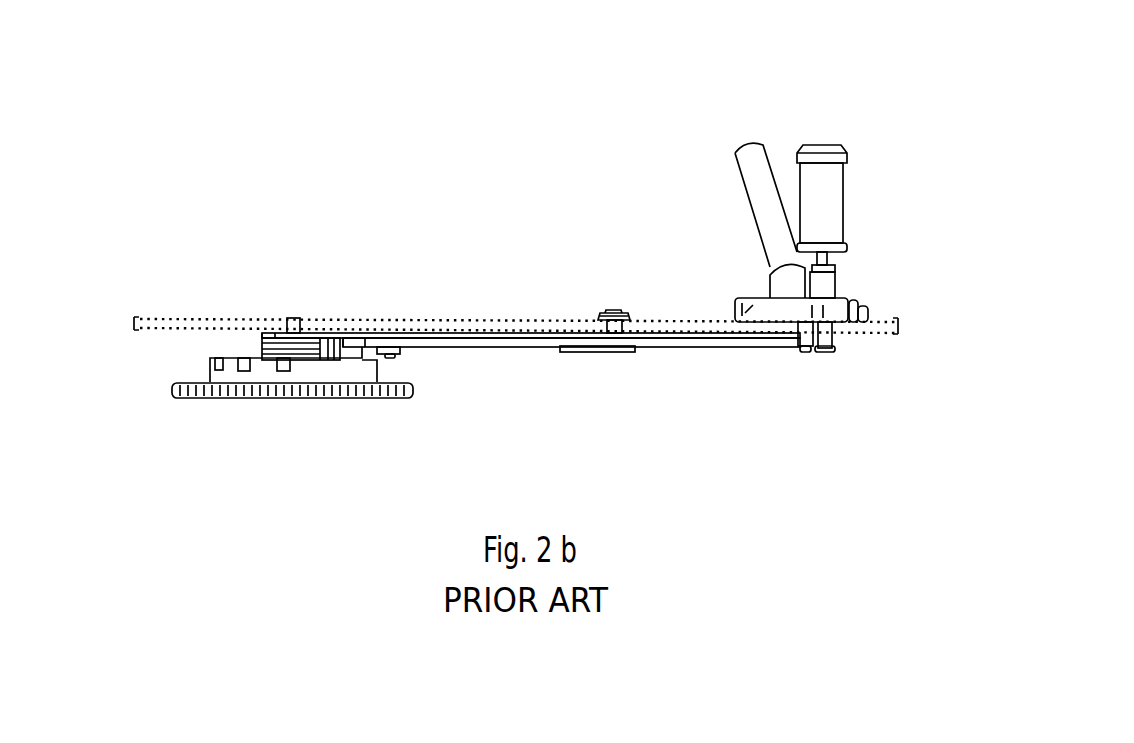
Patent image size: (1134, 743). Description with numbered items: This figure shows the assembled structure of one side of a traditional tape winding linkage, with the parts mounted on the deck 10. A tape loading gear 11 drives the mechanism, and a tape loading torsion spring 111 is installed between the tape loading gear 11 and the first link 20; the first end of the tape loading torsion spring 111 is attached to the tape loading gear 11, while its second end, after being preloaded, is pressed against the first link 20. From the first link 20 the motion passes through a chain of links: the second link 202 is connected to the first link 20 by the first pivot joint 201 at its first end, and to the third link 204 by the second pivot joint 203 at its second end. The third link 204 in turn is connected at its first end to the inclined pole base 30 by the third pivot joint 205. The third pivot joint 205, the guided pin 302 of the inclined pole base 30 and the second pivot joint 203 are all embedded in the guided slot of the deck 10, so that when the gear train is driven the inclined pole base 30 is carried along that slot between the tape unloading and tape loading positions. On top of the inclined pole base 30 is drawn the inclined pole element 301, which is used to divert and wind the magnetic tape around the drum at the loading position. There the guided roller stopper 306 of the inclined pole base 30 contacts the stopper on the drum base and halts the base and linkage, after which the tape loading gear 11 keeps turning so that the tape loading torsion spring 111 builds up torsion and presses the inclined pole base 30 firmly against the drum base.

The deck 10 is at (188, 325).
The tape loading gear 11 is at (288, 398).
The tape loading torsion spring 111 is at (302, 333).
The first link 20 is at (357, 333).
The first pivot joint 201 is at (410, 335).
The second link 202 is at (520, 347).
The second pivot joint 203 is at (623, 310).
The third link 204 is at (614, 403).
The third pivot joint 205 is at (803, 328).
The inclined pole base 30 is at (723, 337).
The clamp handle 301 is at (748, 160).
The guided pin 302 is at (855, 298).
The guided roller stopper 306 is at (847, 240).